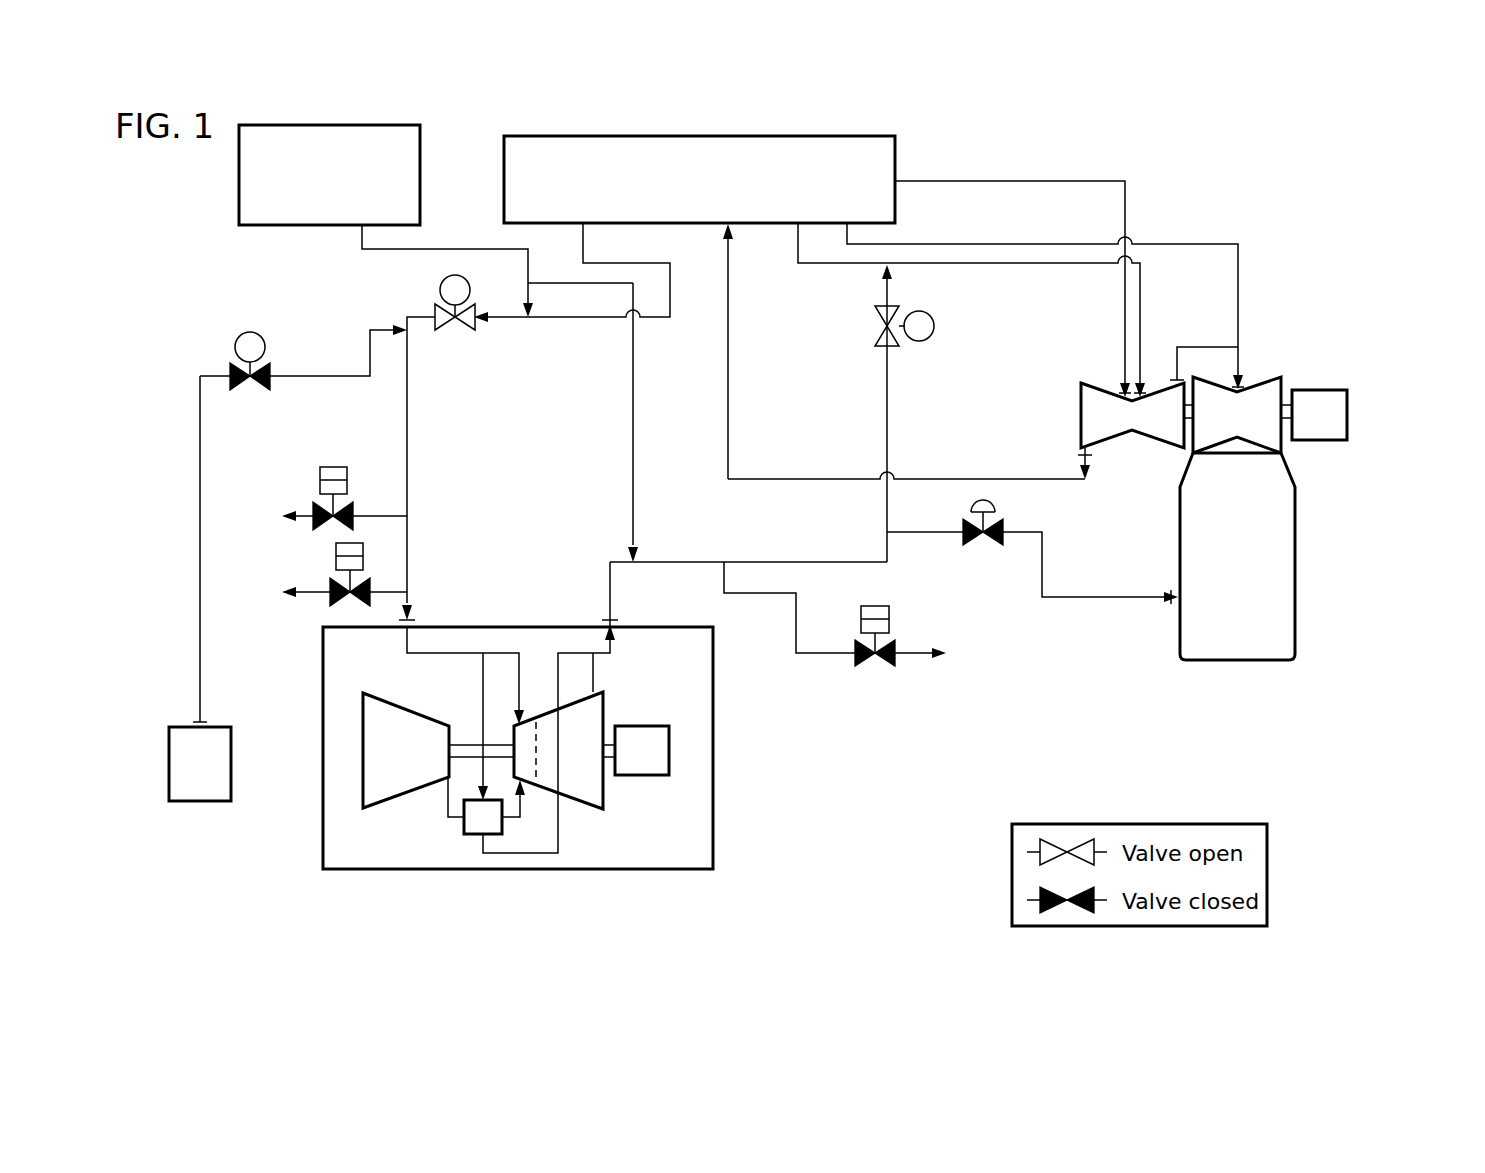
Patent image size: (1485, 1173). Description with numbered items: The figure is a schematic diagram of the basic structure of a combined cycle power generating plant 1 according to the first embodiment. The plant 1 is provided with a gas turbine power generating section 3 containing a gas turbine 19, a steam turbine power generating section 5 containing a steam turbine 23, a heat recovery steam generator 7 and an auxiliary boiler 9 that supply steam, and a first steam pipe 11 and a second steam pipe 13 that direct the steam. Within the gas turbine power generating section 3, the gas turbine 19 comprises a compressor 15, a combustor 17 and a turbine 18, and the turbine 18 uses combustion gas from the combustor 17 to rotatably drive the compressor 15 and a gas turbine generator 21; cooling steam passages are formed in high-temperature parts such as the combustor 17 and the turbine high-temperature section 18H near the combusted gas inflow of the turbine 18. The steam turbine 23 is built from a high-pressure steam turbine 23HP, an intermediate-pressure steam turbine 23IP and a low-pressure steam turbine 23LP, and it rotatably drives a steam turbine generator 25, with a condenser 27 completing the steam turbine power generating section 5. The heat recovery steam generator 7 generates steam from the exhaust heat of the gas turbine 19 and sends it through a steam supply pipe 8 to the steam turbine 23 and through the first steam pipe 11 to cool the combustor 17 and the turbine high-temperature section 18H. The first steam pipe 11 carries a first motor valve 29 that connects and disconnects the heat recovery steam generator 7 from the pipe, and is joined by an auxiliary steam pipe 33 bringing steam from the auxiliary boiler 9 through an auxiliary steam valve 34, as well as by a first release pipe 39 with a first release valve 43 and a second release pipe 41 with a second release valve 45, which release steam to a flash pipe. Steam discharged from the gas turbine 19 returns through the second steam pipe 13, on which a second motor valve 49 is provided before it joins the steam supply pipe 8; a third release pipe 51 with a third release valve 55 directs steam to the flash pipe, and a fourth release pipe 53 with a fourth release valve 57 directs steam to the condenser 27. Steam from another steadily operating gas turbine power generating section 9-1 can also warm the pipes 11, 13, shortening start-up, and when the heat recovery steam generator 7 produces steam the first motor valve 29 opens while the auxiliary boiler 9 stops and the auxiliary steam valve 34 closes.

The combined cycle power generating plant 1 is at (1302, 188).
The gas turbine power generating section 3 is at (603, 772).
The steam turbine power generating section 5 is at (1318, 290).
The heat recovery steam generator 7 is at (504, 178).
The steam supply pipe 8 is at (808, 265).
The auxiliary boiler 9 is at (205, 803).
The another gas turbine power generating section 9-1 is at (320, 226).
The first steam pipe 11 is at (583, 318).
The second steam pipe 13 is at (660, 560).
The compressor 15 is at (397, 793).
The combustor 17 is at (472, 836).
The turbine 18 is at (558, 802).
The turbine high-temperature section 18H is at (527, 716).
The gas turbine 19 is at (481, 824).
The gas turbine generator 21 is at (669, 748).
The steam turbine 23 is at (1178, 372).
The high-pressure steam turbine 23HP is at (1081, 412).
The intermediate-pressure steam turbine 23IP is at (1162, 392).
The low-pressure steam turbine 23LP is at (1200, 448).
The steam turbine generator 25 is at (1320, 396).
The condenser 27 is at (1240, 662).
The first motor valve 29 is at (440, 290).
The auxiliary steam pipe 33 is at (200, 592).
The auxiliary steam valve 34 is at (250, 330).
The first release pipe 39 is at (375, 515).
The second release pipe 41 is at (386, 590).
The first release valve 43 is at (328, 466).
The second release valve 45 is at (336, 548).
The second motor valve 49 is at (934, 326).
The third release pipe 51 is at (822, 657).
The fourth release pipe 53 is at (1088, 600).
The third release valve 55 is at (882, 668).
The fourth release valve 57 is at (990, 548).